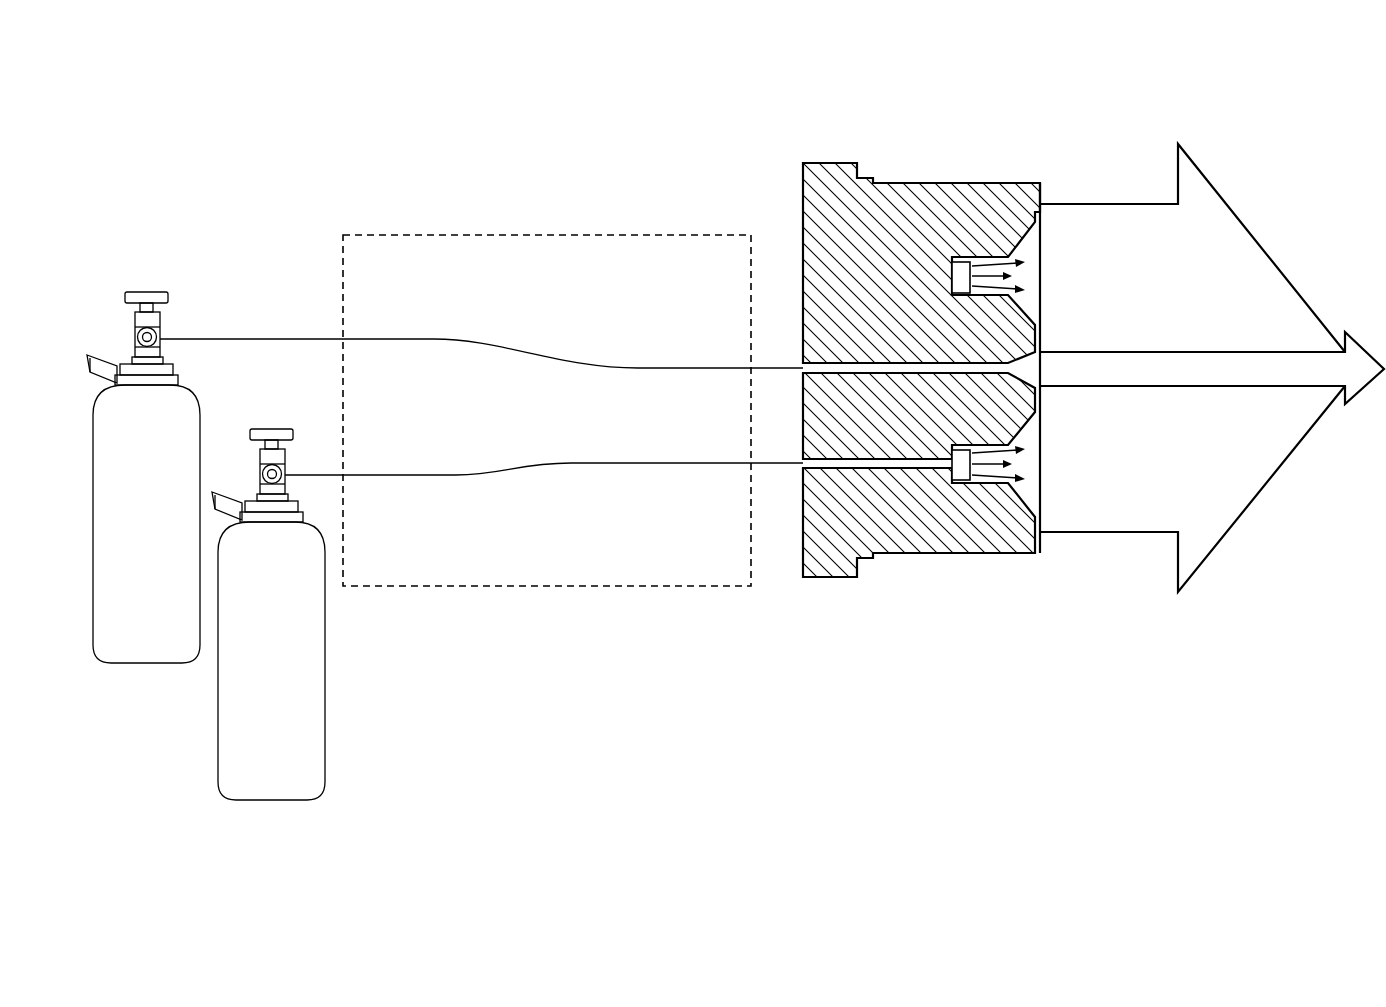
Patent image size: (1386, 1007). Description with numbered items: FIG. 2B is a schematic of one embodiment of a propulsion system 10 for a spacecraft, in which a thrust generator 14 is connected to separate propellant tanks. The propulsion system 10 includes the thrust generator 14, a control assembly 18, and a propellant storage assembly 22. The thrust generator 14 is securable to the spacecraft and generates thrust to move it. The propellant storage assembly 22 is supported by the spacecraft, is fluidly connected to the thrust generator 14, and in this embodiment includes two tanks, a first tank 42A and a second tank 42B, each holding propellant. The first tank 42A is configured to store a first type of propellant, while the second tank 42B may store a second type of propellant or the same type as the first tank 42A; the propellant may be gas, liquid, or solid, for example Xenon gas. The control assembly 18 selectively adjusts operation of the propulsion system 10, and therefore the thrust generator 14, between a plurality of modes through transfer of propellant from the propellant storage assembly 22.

The propulsion system 10 is at (470, 93).
The thrust generator 14 is at (987, 158).
The control assembly 18 is at (675, 204).
The propellant storage assembly 22 is at (145, 278).
The first tank 42A is at (283, 802).
The second tank 42B is at (137, 473).